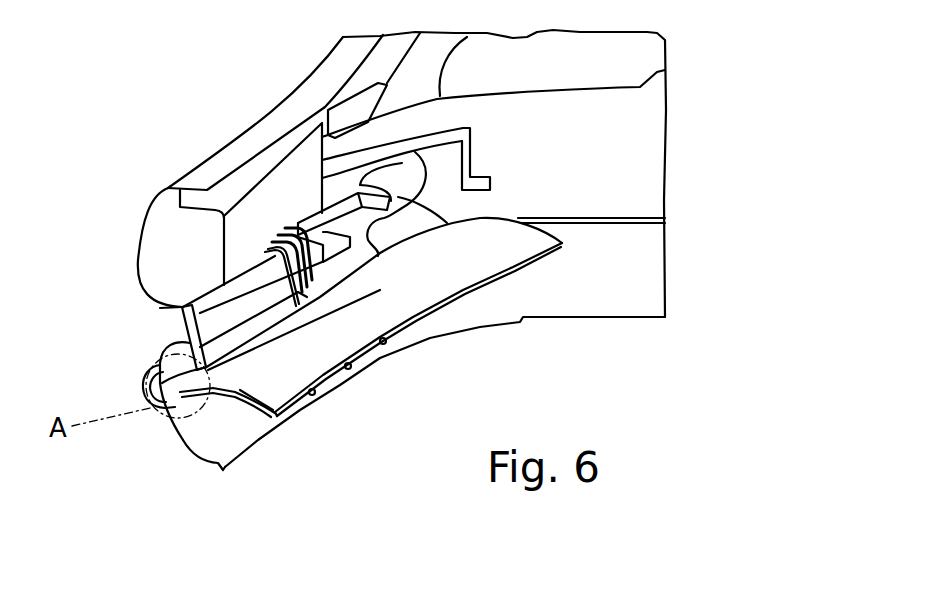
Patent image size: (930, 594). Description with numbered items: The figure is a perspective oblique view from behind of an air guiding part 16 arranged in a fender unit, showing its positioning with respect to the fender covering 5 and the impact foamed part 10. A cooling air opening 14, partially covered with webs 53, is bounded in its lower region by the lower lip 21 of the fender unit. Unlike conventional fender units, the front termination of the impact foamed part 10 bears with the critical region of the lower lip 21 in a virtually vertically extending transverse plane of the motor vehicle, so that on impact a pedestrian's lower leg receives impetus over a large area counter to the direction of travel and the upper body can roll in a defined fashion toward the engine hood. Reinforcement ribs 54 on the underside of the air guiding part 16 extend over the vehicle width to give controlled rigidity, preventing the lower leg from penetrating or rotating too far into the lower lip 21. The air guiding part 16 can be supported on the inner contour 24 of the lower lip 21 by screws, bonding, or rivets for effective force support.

The fender covering 5 is at (272, 125).
The impact foamed part 10 is at (172, 252).
The cooling air opening 14 is at (138, 349).
The air guiding part 16 is at (432, 298).
The lower lip 21 is at (174, 425).
The inner contour 24 is at (208, 432).
The webs 53 is at (300, 287).
The reinforcement ribs 54 is at (253, 408).